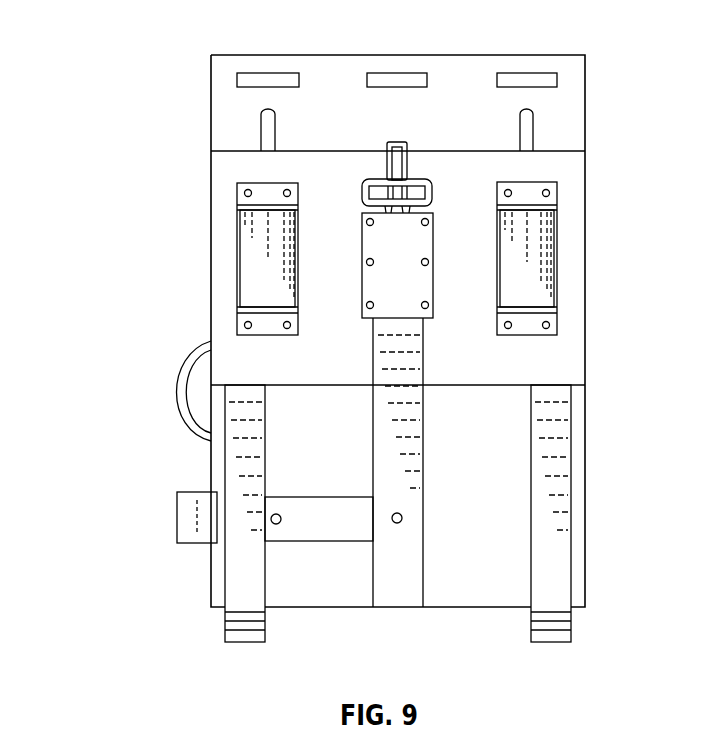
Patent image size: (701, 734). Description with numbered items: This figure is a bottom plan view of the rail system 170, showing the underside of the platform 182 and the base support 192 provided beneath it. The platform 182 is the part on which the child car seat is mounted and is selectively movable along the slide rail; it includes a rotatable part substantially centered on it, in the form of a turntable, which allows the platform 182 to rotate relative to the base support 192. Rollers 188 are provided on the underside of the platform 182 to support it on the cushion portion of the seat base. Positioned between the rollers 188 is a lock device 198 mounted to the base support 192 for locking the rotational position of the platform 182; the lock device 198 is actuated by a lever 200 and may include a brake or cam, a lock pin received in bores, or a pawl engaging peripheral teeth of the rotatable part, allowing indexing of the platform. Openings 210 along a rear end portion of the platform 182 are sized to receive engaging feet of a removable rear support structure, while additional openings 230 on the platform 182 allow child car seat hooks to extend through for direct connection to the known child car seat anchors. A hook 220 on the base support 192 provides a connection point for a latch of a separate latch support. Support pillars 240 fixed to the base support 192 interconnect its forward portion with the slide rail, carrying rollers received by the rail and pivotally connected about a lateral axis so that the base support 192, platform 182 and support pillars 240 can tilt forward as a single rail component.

The rail system 170 is at (113, 36).
The platform 182 is at (467, 73).
The rollers 188 is at (247, 262).
The base support 192 is at (571, 371).
The lock device 198 is at (387, 272).
The lever 200 is at (187, 512).
The openings 210 is at (268, 73).
The hook 220 is at (400, 142).
The additional openings 230 is at (535, 137).
The support pillars 240 is at (232, 475).